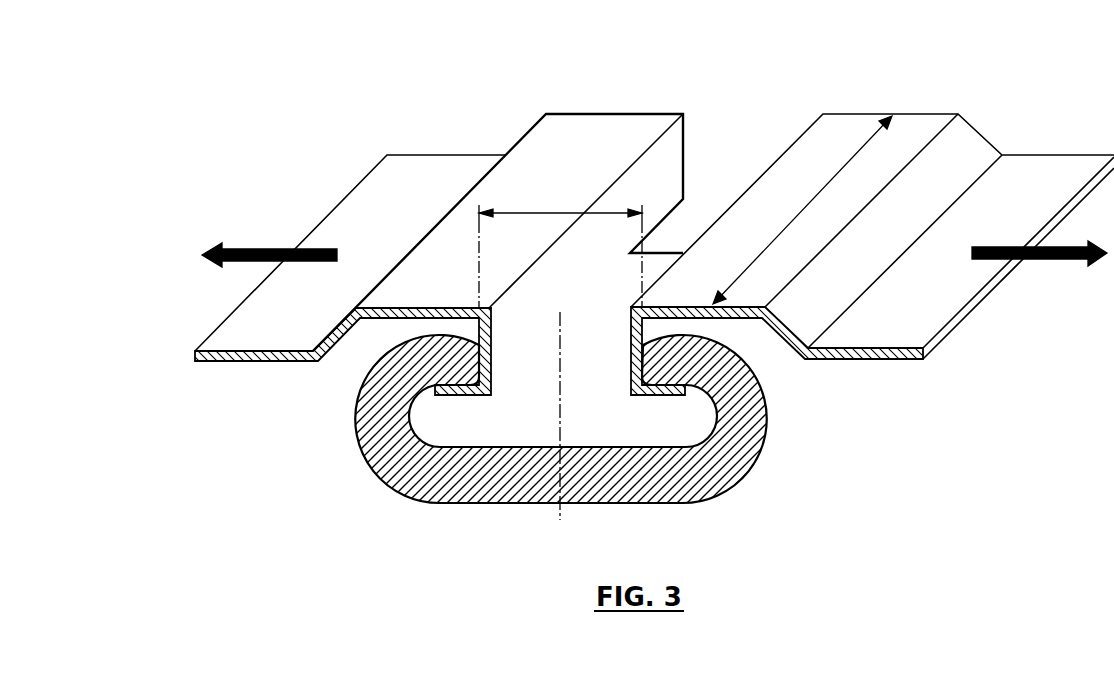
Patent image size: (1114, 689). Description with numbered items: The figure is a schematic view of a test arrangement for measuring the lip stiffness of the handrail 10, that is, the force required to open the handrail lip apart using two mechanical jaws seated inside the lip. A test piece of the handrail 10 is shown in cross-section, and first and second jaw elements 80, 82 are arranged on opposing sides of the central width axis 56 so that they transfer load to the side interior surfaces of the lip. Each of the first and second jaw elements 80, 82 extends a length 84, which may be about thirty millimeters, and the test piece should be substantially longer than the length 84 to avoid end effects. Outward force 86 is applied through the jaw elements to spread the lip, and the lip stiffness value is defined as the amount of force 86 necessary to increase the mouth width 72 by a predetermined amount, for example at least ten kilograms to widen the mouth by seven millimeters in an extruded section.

The handrail 10 is at (403, 509).
The central width axis 56 is at (566, 390).
The mouth width 72 is at (548, 212).
The first jaw element 80 is at (626, 127).
The second jaw element 82 is at (847, 130).
The length 84 is at (810, 200).
The force 86 is at (253, 245).